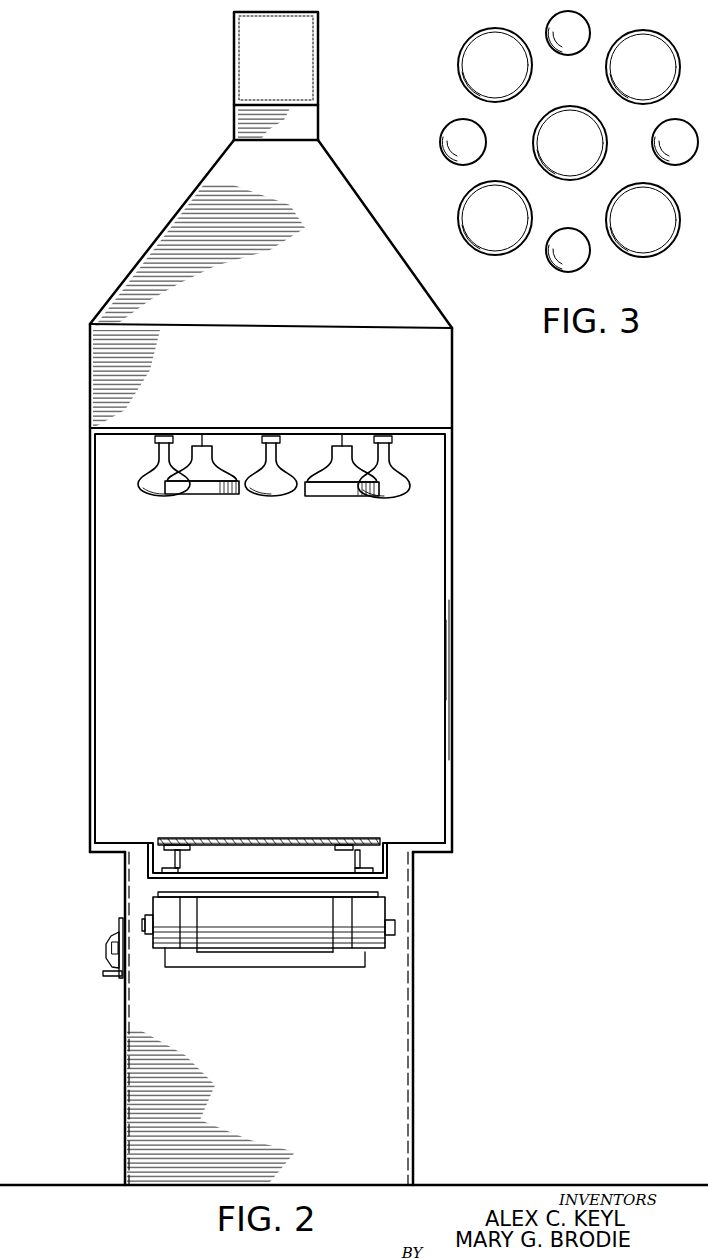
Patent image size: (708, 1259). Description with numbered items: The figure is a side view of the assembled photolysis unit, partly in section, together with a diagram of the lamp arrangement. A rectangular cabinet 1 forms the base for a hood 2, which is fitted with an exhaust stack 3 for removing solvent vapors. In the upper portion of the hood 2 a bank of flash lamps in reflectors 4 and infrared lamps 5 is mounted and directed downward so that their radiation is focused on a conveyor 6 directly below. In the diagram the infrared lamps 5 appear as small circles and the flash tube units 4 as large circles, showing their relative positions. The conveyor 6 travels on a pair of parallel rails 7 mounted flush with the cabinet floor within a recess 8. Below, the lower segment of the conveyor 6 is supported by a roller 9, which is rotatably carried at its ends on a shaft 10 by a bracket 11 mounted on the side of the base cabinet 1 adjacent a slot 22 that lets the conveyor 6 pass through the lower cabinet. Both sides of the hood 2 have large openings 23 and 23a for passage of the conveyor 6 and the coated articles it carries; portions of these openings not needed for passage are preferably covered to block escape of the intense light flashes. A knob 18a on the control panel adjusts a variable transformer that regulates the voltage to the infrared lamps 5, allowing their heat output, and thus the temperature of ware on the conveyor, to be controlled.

In FIG. 2, the cabinet 1 is at (413, 1019).
In FIG. 2, the hood 2 is at (450, 582).
In FIG. 2, the exhaust stack 3 is at (318, 75).
In FIG. 2, the flash lamps in reflectors 4 is at (203, 495).
In FIG. 3, the flash lamps in reflectors 4 is at (603, 70).
In FIG. 2, the infrared lamps 5 is at (152, 493).
In FIG. 3, the infrared lamps 5 is at (484, 155).
In FIG. 2, the conveyor 6 is at (340, 840).
In FIG. 2, the rails 7 is at (180, 860).
In FIG. 2, the recess 8 is at (323, 877).
In FIG. 2, the roller 9 is at (380, 952).
In FIG. 2, the shaft 10 is at (396, 927).
In FIG. 2, the bracket 11 is at (386, 913).
In FIG. 2, the knob 18a is at (115, 941).
In FIG. 2, the slot 22 is at (373, 897).
In FIG. 2, the opening 23 is at (425, 707).
In FIG. 2, the opening 23a is at (428, 680).